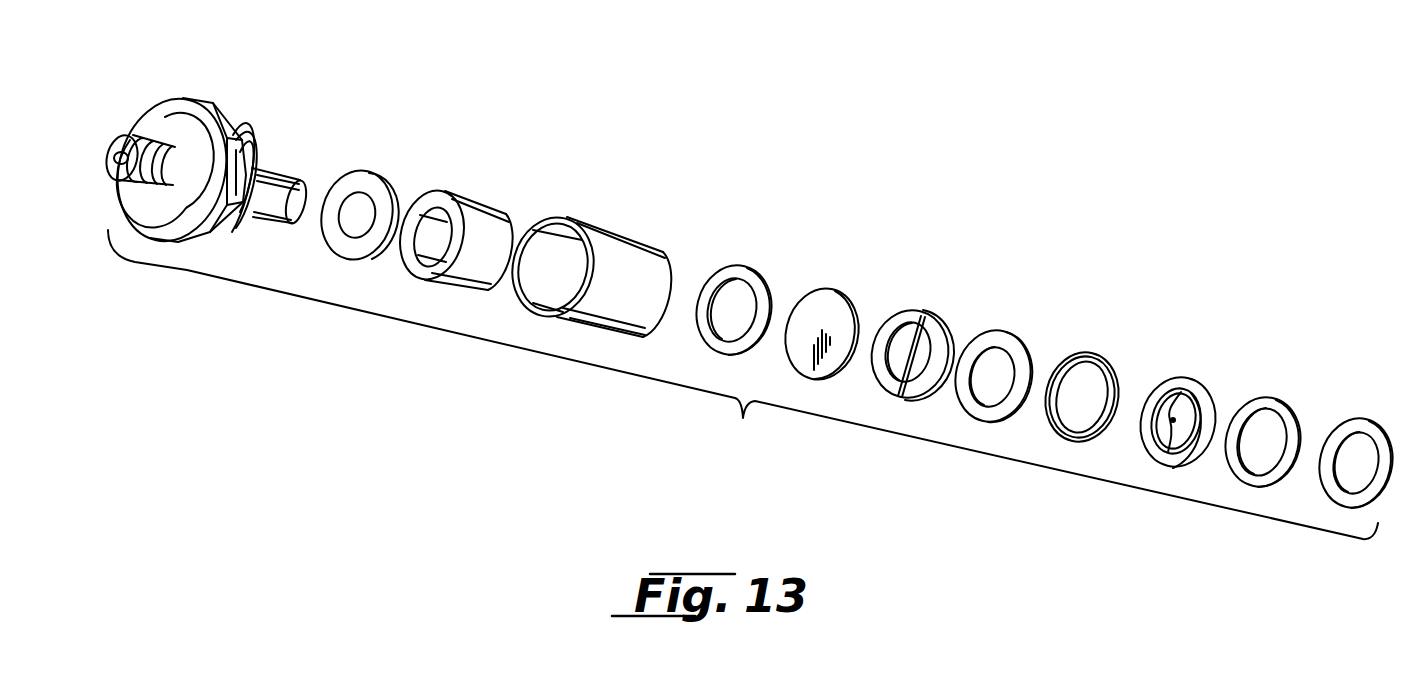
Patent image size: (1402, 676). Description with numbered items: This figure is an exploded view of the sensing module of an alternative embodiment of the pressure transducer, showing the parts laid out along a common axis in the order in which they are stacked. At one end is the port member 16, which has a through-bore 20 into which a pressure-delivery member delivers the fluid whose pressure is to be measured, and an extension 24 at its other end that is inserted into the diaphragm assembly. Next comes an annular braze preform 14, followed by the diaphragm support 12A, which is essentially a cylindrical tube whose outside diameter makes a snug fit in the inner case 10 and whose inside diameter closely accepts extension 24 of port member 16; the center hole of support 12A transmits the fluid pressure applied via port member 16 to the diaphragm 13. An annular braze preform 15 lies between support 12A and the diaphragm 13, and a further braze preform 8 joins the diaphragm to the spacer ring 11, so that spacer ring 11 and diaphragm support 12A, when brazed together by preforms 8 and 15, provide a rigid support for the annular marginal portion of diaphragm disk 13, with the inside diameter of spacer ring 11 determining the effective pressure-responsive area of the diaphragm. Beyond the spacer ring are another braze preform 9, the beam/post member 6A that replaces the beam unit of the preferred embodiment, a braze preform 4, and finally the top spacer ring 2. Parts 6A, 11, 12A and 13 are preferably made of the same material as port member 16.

The top spacer ring 2 is at (1360, 418).
The annular braze preform 4 is at (1268, 400).
The beam/post member 6A is at (1185, 382).
The annular braze preform 8 is at (920, 315).
The annular braze preform 9 is at (1083, 352).
The inner case 10 is at (625, 227).
The spacer ring 11 is at (995, 333).
The diaphragm support 12A is at (463, 192).
The diaphragm 13 is at (828, 288).
The annular braze preform 14 is at (363, 173).
The annular braze preform 15 is at (745, 265).
The port member 16 is at (166, 100).
The through-bore 20 is at (112, 150).
The extension 24 is at (287, 175).